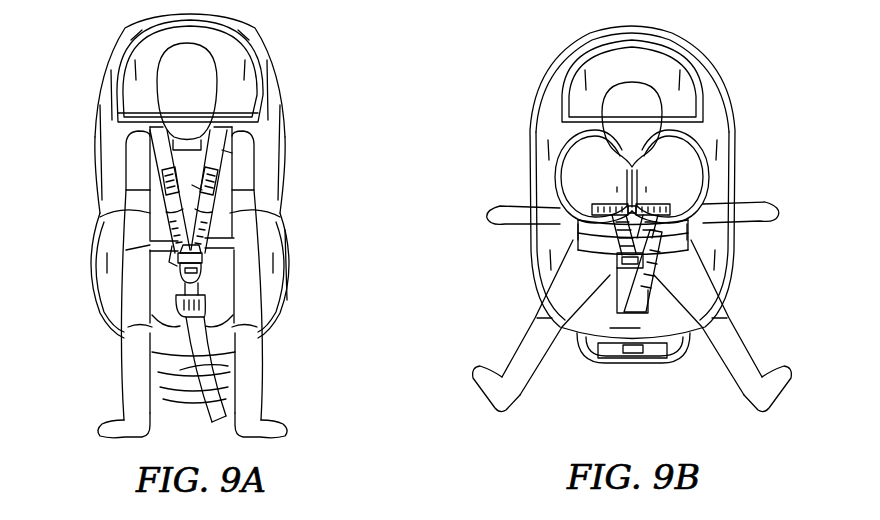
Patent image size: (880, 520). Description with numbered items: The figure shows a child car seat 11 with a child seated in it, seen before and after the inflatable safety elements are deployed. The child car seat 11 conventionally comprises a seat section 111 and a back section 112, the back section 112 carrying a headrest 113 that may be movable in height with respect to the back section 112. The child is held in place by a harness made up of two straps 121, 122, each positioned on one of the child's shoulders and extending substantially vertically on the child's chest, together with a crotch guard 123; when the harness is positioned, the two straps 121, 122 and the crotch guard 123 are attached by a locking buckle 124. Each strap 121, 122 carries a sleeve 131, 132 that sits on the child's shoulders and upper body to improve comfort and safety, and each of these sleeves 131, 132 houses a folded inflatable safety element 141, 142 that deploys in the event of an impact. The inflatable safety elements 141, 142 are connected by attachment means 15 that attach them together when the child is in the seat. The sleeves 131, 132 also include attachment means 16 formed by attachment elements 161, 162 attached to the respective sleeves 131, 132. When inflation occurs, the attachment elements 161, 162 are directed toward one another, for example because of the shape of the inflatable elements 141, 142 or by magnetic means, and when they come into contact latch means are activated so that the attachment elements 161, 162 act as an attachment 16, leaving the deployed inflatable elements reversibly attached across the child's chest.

In FIG. 9A, the child car seat 11 is at (284, 80).
In FIG. 9A, the seat section 111 is at (281, 302).
In FIG. 9A, the back section 112 is at (265, 118).
In FIG. 9A, the headrest 113 is at (229, 48).
In FIG. 9A, the strap 121 is at (163, 222).
In FIG. 9A, the strap 122 is at (196, 242).
In FIG. 9A, the crotch guard 123 is at (203, 322).
In FIG. 9A, the locking buckle 124 is at (167, 263).
In FIG. 9A, the sleeve 131 is at (159, 143).
In FIG. 9A, the sleeve 132 is at (231, 152).
In FIG. 9B, the inflatable safety element 141 is at (593, 175).
In FIG. 9B, the inflatable safety element 142 is at (669, 162).
In FIG. 9A, the attachment means 15 is at (217, 243).
In FIG. 9B, the attachment means 16 is at (636, 206).
In FIG. 9A, the attachment element 161 is at (229, 152).
In FIG. 9A, the attachment element 162 is at (197, 188).